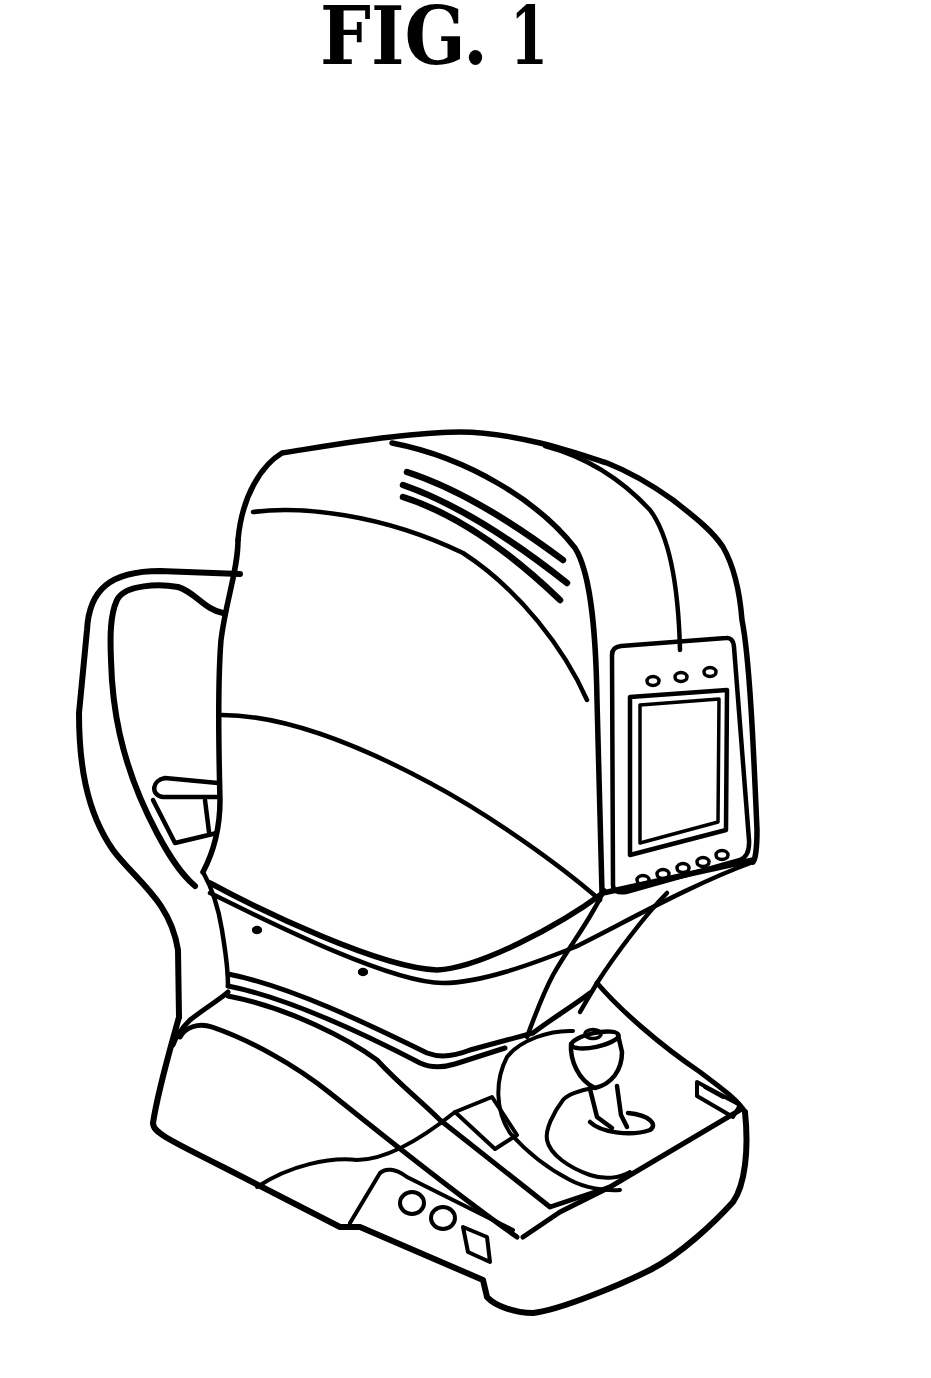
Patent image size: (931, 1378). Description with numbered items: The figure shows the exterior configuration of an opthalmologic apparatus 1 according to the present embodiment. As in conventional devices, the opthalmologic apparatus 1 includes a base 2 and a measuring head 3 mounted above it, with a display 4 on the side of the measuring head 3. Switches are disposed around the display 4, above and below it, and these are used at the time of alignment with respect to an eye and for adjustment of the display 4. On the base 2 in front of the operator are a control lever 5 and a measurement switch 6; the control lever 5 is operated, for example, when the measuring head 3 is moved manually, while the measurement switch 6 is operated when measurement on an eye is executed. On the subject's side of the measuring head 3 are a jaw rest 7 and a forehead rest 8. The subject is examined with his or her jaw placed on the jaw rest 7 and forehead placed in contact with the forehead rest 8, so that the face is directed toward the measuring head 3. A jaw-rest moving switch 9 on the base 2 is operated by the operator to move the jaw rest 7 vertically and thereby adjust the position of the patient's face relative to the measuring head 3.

The opthalmologic apparatus 1 is at (704, 464).
The base 2 is at (192, 1107).
The measuring head 3 is at (708, 572).
The display 4 is at (703, 724).
The control lever 5 is at (613, 1071).
The measurement switch 6 is at (641, 1017).
The jaw rest 7 is at (157, 779).
The forehead rest 8 is at (208, 592).
The jaw-rest moving switch 9 is at (262, 1182).